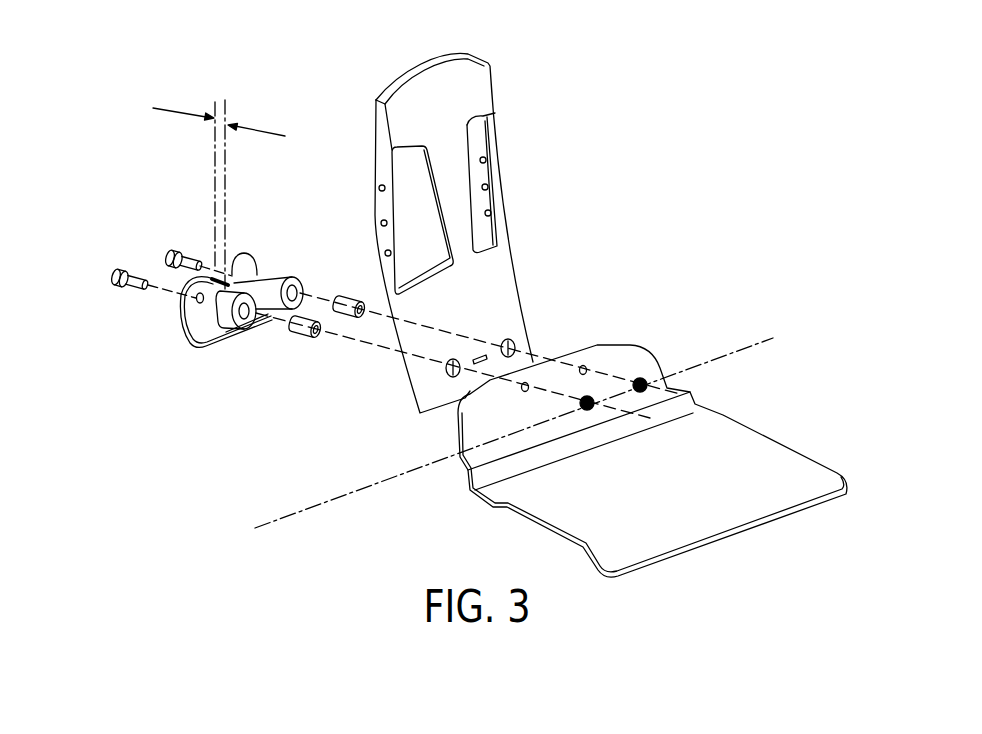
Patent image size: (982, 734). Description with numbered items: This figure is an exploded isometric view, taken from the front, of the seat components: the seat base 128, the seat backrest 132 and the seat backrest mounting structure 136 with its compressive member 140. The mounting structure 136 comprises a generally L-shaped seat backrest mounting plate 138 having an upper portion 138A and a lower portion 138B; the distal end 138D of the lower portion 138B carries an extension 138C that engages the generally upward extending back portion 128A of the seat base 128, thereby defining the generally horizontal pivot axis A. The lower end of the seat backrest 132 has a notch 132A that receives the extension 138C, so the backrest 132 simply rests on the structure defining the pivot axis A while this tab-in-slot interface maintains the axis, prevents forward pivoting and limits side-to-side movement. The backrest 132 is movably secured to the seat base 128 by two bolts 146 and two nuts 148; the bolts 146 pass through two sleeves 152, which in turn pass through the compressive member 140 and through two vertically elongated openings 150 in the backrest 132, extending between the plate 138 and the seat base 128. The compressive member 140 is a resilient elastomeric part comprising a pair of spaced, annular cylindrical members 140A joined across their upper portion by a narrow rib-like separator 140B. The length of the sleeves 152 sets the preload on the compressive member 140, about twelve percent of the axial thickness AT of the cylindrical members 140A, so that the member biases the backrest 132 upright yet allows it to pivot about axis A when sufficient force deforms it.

The seat base 128 is at (652, 459).
The upward extending back portion of the seat base 128A is at (563, 370).
The seat backrest 132 is at (451, 239).
The notch 132A is at (444, 422).
The seat backrest mounting structure 136 is at (118, 250).
The seat backrest mounting plate 138 is at (209, 302).
The upper portion of the mounting plate 138A is at (248, 252).
The lower portion of the mounting plate 138B is at (200, 348).
The extension 138C is at (243, 322).
The distal end of the lower portion 138D is at (258, 322).
The compressive member 140 is at (303, 264).
The cylindrical members 140A is at (306, 297).
The separator 140B is at (258, 262).
The bolts 146 is at (167, 252).
The nuts 148 is at (640, 393).
The openings 150 is at (505, 338).
The sleeves 152 is at (357, 320).
The pivot axis A is at (311, 517).
The axial thickness AT is at (215, 98).